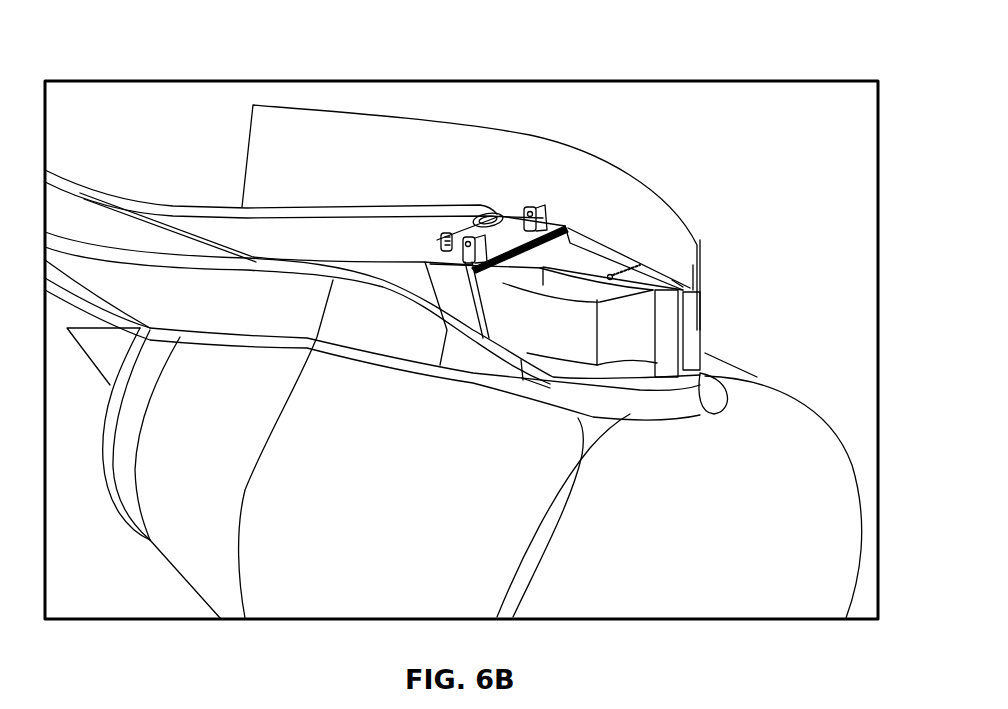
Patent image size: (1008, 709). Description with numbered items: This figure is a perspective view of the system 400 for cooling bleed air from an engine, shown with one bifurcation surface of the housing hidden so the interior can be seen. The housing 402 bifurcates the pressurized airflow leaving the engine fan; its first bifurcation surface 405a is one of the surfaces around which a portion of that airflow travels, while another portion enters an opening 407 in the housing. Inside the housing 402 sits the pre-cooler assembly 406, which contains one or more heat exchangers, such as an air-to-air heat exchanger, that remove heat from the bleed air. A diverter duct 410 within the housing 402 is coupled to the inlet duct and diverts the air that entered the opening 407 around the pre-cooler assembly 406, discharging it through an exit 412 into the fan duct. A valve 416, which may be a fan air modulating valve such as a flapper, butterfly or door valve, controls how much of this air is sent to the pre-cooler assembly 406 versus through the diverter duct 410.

The system for cooling bleed air 400 is at (203, 152).
The housing 402 is at (574, 115).
The first bifurcation surface 405a is at (623, 253).
The pre-cooler assembly 406 is at (514, 215).
The opening 407 is at (697, 317).
The diverter duct 410 is at (633, 340).
The exit 412 is at (522, 326).
The valve 416 is at (618, 266).